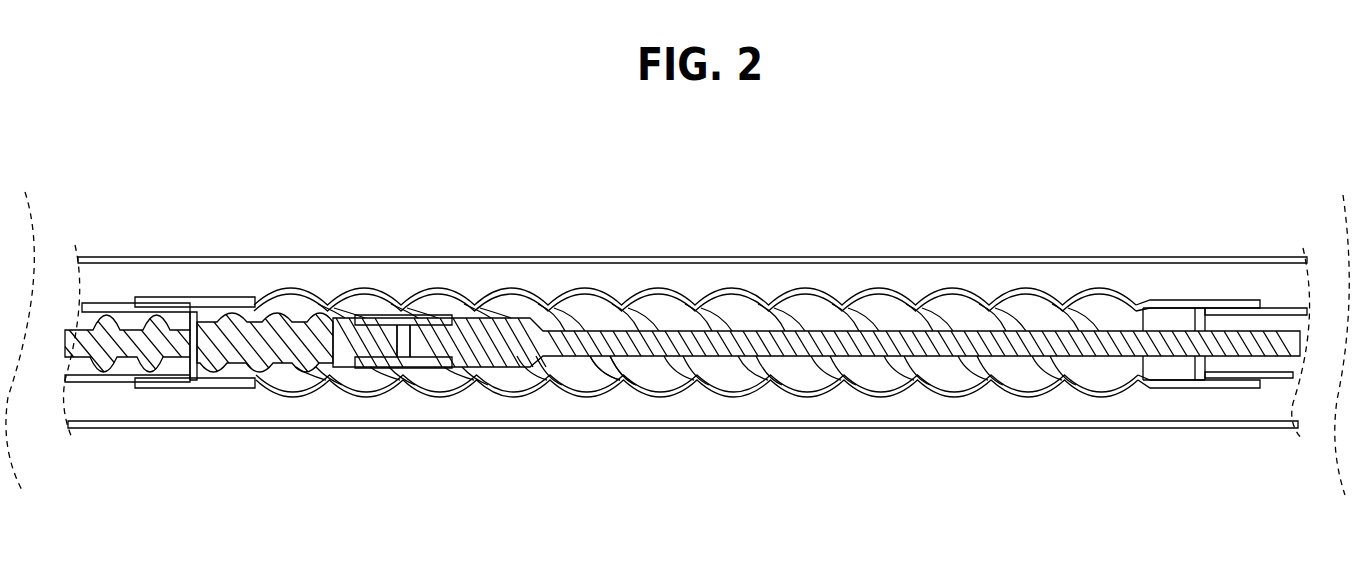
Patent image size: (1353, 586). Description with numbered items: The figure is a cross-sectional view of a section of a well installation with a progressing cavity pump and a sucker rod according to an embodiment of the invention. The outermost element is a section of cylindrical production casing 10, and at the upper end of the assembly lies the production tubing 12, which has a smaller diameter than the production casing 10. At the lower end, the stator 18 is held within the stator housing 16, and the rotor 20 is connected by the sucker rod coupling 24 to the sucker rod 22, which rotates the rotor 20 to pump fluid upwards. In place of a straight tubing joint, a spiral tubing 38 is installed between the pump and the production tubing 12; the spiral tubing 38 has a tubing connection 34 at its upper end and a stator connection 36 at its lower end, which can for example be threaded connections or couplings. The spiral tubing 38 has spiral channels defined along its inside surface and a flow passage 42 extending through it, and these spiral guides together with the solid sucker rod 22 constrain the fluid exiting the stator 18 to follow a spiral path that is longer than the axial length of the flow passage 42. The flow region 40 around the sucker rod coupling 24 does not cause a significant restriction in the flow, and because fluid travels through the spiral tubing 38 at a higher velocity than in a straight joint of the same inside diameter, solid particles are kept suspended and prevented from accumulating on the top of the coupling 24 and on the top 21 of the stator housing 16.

The production casing 10 is at (585, 257).
The production tubing 12 is at (1285, 308).
The stator housing 16 is at (97, 303).
The stator 18 is at (108, 318).
The rotor 20 is at (287, 345).
The top of the stator housing 21 is at (193, 326).
The sucker rod 22 is at (747, 340).
The sucker rod coupling 24 is at (405, 315).
The tubing connection 34 is at (1220, 300).
The stator connection 36 is at (165, 298).
The spiral tubing 38 is at (1028, 289).
The flow region 40 is at (403, 370).
The flow passage 42 is at (606, 372).